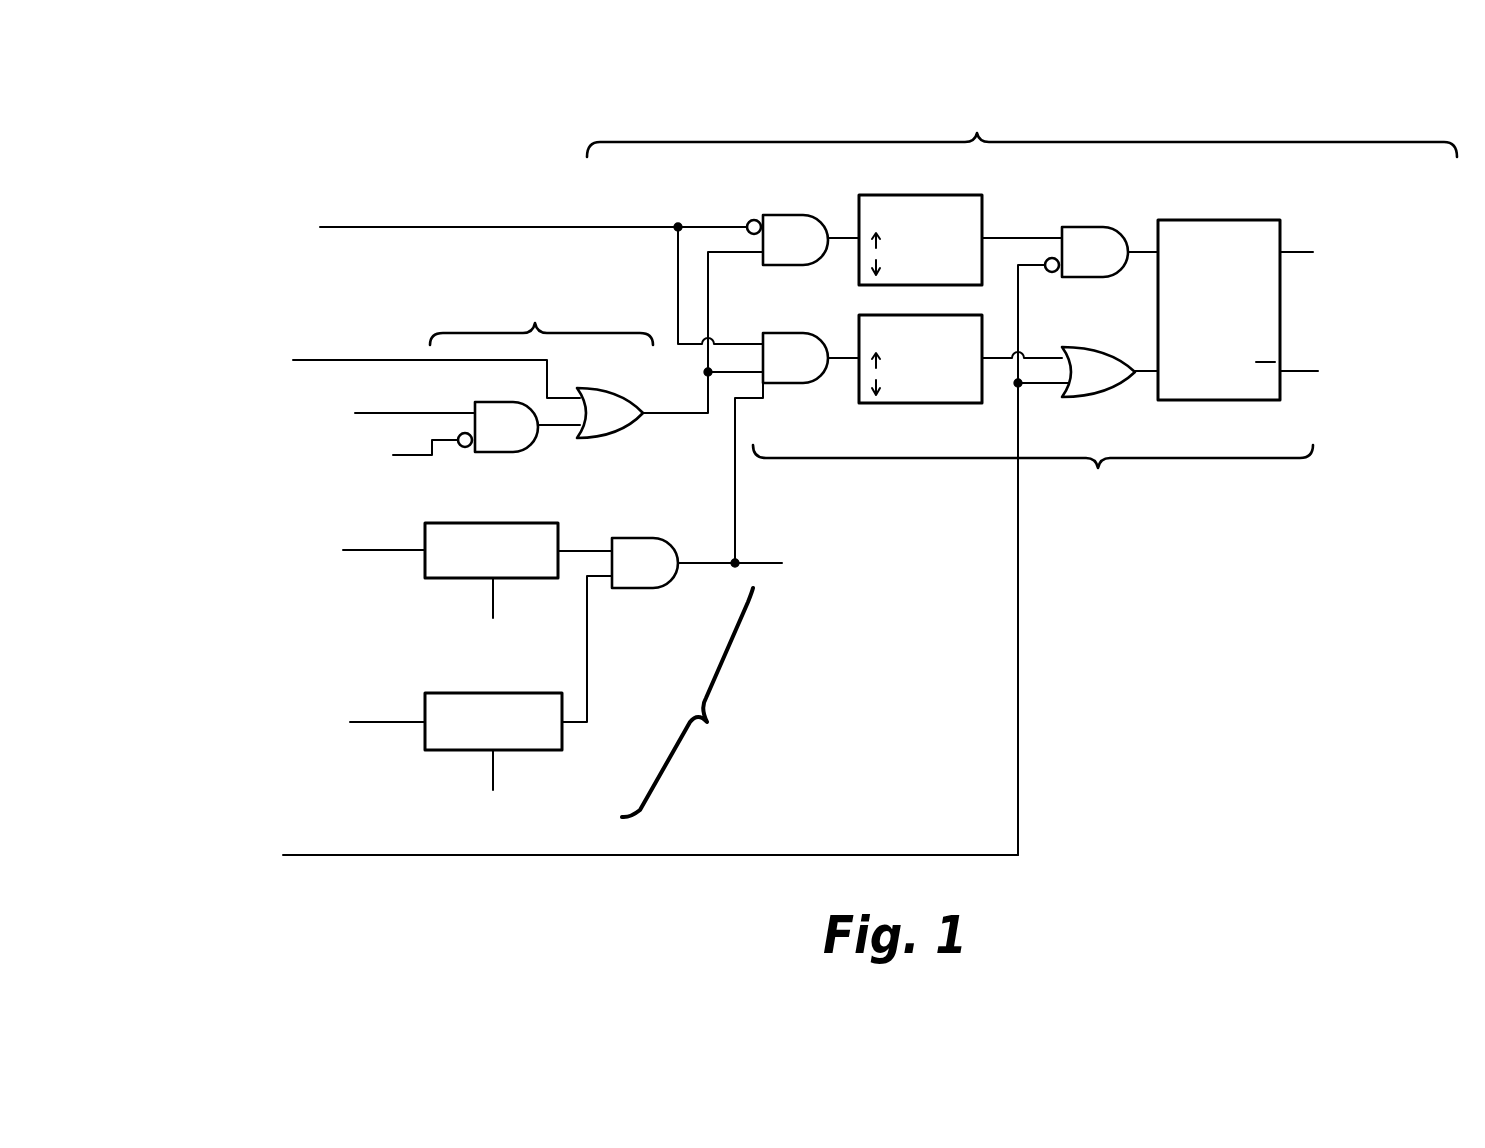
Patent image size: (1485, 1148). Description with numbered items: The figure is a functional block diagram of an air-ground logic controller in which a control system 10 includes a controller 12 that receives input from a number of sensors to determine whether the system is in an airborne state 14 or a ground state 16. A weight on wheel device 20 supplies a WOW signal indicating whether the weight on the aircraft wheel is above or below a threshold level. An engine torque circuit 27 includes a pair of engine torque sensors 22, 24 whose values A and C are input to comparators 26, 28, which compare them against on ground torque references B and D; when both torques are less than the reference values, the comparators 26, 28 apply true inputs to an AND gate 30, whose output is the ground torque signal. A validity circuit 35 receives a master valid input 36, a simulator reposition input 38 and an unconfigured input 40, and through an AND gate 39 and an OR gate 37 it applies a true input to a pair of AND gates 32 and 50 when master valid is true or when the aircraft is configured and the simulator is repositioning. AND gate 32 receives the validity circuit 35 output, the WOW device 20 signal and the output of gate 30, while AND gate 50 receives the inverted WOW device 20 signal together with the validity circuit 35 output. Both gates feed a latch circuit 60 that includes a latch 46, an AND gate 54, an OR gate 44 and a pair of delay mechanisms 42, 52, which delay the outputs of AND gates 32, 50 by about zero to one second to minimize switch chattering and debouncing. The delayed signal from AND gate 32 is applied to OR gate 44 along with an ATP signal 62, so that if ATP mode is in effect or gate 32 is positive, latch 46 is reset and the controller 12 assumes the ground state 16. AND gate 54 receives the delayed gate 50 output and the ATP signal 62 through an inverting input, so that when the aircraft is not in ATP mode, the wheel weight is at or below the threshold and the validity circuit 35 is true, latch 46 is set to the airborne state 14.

The control system 10 is at (372, 110).
The controller 12 is at (1022, 130).
The airborne state 14 is at (1420, 228).
The ground state 16 is at (1402, 392).
The weight on wheel device 20 is at (225, 215).
The engine torque sensor 22 is at (225, 550).
The engine torque sensor 24 is at (225, 722).
The comparator 26 is at (562, 530).
The engine torque circuit 27 is at (687, 702).
The comparator 28 is at (556, 737).
The AND gate 30 is at (648, 585).
The AND gate 32 is at (798, 383).
The validity circuit 35 is at (541, 319).
The master valid input 36 is at (225, 333).
The OR gate 37 is at (632, 425).
The simulator reposition input 38 is at (225, 407).
The AND gate 39 is at (512, 452).
The unconfigured input 40 is at (225, 457).
The delay mechanism 42 is at (945, 403).
The OR gate 44 is at (1098, 392).
The latch 46 is at (1238, 390).
The AND gate 50 is at (793, 216).
The delay mechanism 52 is at (873, 200).
The AND gate 54 is at (1091, 230).
The latch circuit 60 is at (1033, 470).
The ATP signal 62 is at (225, 852).